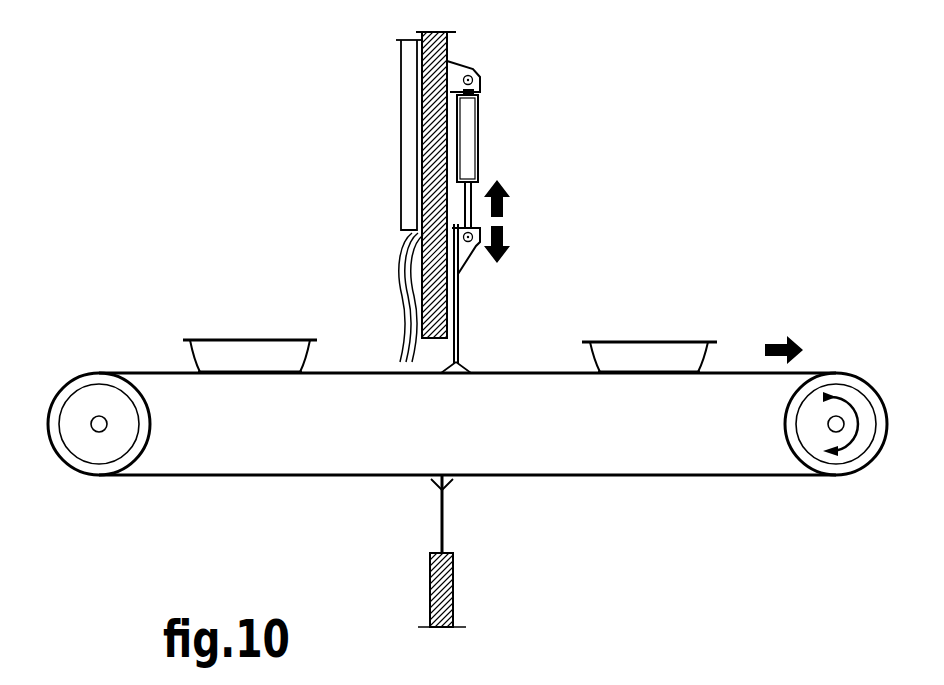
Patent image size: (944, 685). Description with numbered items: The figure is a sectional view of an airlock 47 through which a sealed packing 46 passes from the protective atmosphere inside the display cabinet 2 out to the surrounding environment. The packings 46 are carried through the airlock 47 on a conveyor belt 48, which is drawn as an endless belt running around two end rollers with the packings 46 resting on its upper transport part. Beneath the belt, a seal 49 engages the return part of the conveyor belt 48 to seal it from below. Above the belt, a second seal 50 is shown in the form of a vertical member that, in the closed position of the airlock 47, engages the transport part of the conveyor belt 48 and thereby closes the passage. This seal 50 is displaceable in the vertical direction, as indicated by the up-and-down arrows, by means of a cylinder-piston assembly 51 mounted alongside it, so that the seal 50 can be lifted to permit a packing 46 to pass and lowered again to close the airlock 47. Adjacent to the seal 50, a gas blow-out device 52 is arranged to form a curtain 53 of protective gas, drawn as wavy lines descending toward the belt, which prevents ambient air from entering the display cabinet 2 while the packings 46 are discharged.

The display cabinet 2 is at (221, 150).
The sealed packing 46 is at (262, 352).
The airlock 47 is at (527, 241).
The conveyor belt 48 is at (221, 478).
The seal 49 is at (445, 527).
The seal 50 is at (458, 343).
The cylinder-piston assembly 51 is at (470, 145).
The gas blow-out device 52 is at (408, 168).
The curtain of protective gas 53 is at (410, 275).